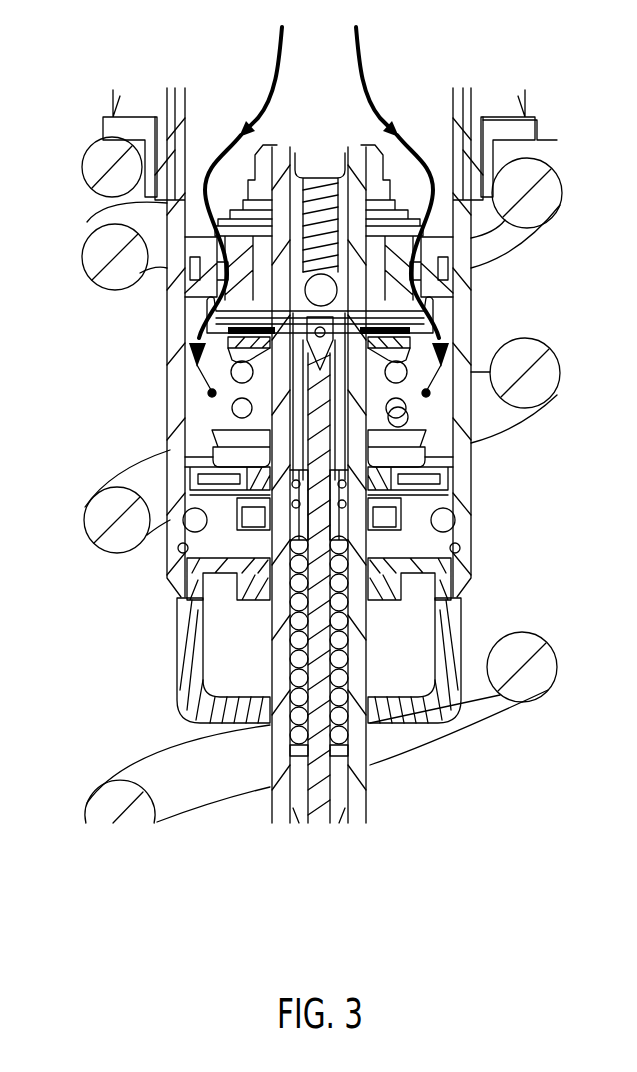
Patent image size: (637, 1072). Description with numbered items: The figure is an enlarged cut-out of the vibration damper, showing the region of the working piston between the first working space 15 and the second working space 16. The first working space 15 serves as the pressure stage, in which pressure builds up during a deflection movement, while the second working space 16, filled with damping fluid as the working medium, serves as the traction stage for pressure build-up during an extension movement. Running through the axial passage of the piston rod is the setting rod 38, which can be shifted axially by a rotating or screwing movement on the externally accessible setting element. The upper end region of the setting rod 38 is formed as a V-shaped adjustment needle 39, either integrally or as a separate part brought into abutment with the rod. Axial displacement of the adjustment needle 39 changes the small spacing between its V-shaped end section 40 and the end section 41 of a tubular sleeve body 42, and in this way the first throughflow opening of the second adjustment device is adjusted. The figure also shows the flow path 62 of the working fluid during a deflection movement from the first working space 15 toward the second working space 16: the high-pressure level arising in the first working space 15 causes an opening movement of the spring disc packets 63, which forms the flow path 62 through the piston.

The first working space 15 is at (203, 110).
The second working space 16 is at (438, 425).
The setting rod 38 is at (330, 622).
The V-shaped adjustment needle 39 is at (330, 470).
The V-shaped end section 40 is at (400, 352).
The end section 41 is at (407, 297).
The tubular sleeve body 42 is at (245, 258).
The flow path 62 is at (363, 50).
The spring disc packets 63 is at (385, 335).